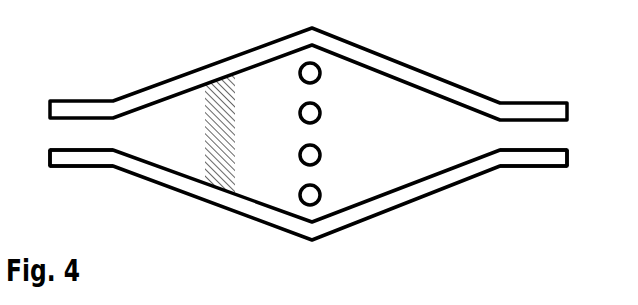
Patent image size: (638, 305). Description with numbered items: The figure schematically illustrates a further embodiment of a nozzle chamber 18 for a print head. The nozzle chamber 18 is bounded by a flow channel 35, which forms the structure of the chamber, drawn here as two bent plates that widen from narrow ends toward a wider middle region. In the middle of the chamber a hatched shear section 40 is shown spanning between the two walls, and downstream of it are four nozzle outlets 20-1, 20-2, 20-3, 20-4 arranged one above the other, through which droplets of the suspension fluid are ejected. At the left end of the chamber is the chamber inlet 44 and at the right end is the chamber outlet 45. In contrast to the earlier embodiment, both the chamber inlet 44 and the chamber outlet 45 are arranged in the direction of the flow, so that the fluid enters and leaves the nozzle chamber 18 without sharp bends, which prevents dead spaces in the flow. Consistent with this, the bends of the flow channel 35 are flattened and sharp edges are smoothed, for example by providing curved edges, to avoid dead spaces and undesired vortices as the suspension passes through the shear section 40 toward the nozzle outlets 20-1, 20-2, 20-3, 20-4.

The flow channel 35 is at (437, 80).
The nozzle chamber 18 is at (270, 188).
The shear section 40 is at (203, 103).
The chamber inlet 44 is at (70, 167).
The chamber outlet 45 is at (547, 167).
The nozzle outlet 20-1 is at (321, 75).
The nozzle outlet 20-2 is at (321, 114).
The nozzle outlet 20-3 is at (321, 153).
The nozzle outlet 20-4 is at (320, 197).